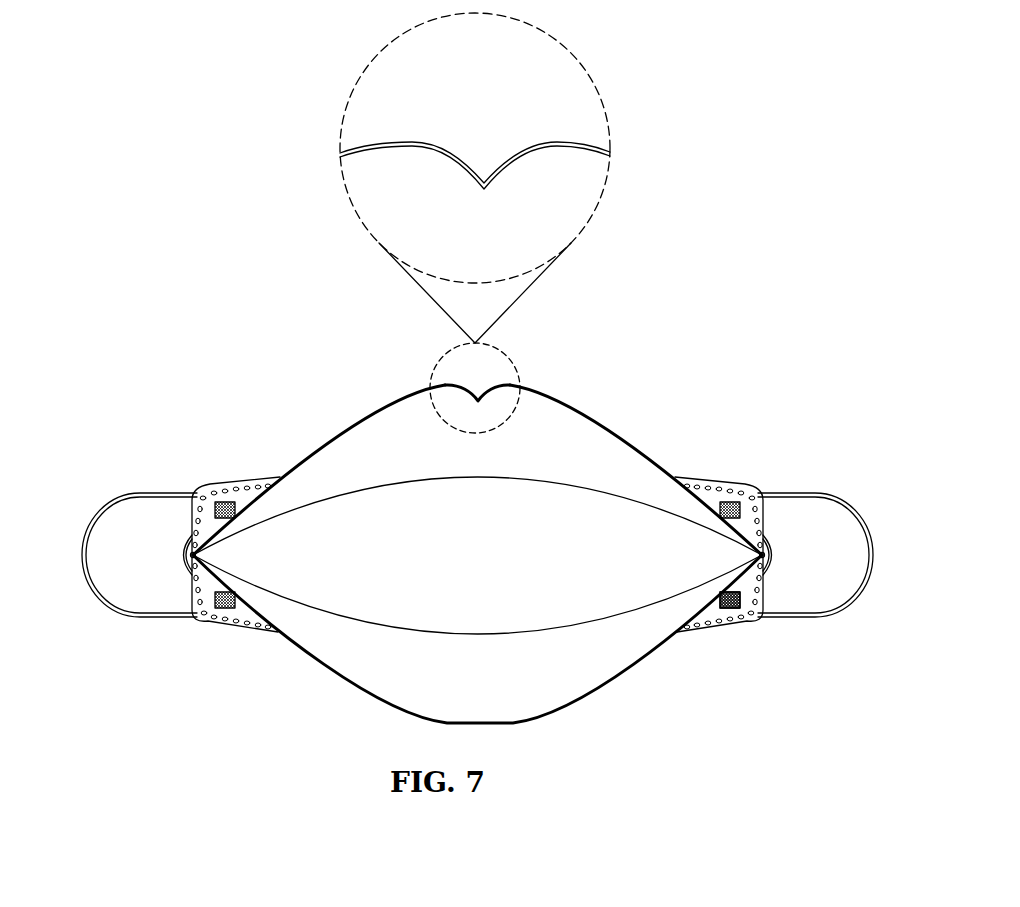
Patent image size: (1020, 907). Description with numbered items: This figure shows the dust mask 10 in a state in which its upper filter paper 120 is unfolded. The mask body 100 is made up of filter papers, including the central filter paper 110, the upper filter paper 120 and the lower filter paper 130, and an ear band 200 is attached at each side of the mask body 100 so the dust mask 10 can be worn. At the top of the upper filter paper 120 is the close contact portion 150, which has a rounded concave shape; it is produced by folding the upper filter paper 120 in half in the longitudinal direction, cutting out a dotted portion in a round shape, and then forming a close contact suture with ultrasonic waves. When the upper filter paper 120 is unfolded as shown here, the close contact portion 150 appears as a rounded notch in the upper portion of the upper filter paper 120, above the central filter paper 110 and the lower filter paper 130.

The dust mask 10 is at (474, 506).
The mask body 100 is at (702, 478).
The central filter paper 110 is at (748, 580).
The upper filter paper 120 is at (345, 463).
The lower filter paper 130 is at (617, 648).
The close contact portion 150 is at (502, 162).
The ear band 200 is at (117, 492).